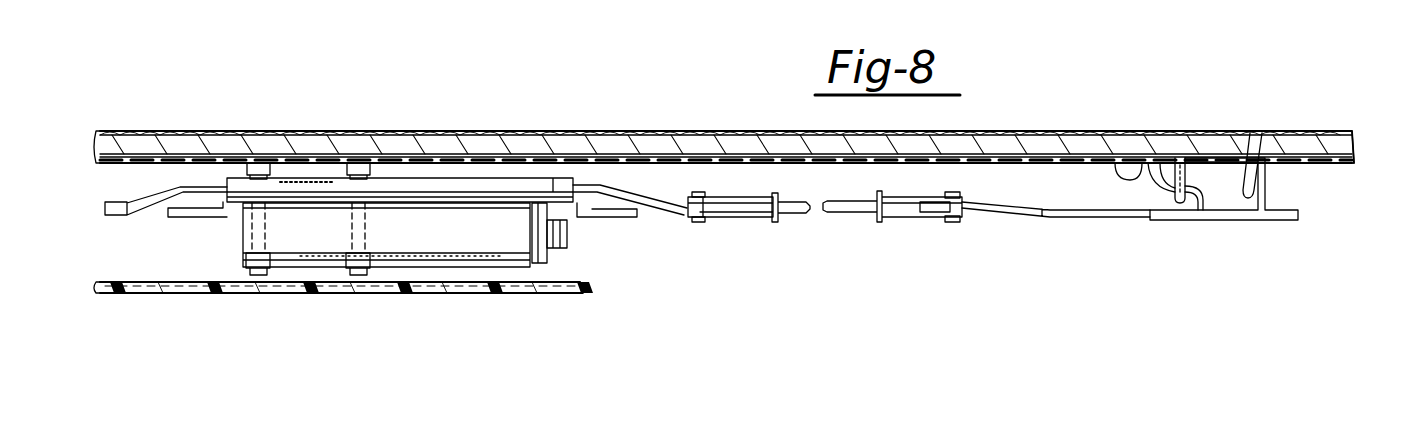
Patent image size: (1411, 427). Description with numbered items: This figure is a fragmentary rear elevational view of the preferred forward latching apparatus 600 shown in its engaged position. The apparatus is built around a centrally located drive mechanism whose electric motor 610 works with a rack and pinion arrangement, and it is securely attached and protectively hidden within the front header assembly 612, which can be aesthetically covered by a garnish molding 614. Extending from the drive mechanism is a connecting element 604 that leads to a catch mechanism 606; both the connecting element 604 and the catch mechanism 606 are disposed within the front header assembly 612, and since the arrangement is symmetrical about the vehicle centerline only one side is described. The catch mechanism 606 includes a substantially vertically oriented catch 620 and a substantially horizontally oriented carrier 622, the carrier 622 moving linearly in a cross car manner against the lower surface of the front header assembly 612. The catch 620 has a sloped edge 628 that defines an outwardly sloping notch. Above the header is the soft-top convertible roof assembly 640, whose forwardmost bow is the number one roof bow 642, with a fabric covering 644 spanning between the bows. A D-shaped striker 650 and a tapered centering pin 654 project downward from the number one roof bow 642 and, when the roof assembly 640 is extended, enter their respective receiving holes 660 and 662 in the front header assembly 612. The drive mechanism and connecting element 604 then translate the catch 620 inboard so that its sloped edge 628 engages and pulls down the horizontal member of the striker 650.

The forward latching apparatus 600 is at (312, 295).
The connecting element 604 is at (753, 190).
The catch mechanism 606 is at (1234, 166).
The electric motor 610 is at (430, 217).
The front header assembly 612 is at (579, 285).
The garnish molding 614 is at (793, 155).
The catch 620 is at (1137, 172).
The carrier 622 is at (1162, 222).
The sloped edge 628 is at (1122, 180).
The soft-top convertible roof assembly 640 is at (729, 84).
The number one roof bow 642 is at (628, 157).
The fabric covering 644 is at (503, 130).
The striker 650 is at (1197, 230).
The tapered centering pin 654 is at (1272, 135).
The receiving hole 660 is at (1177, 157).
The receiving hole 662 is at (1227, 130).